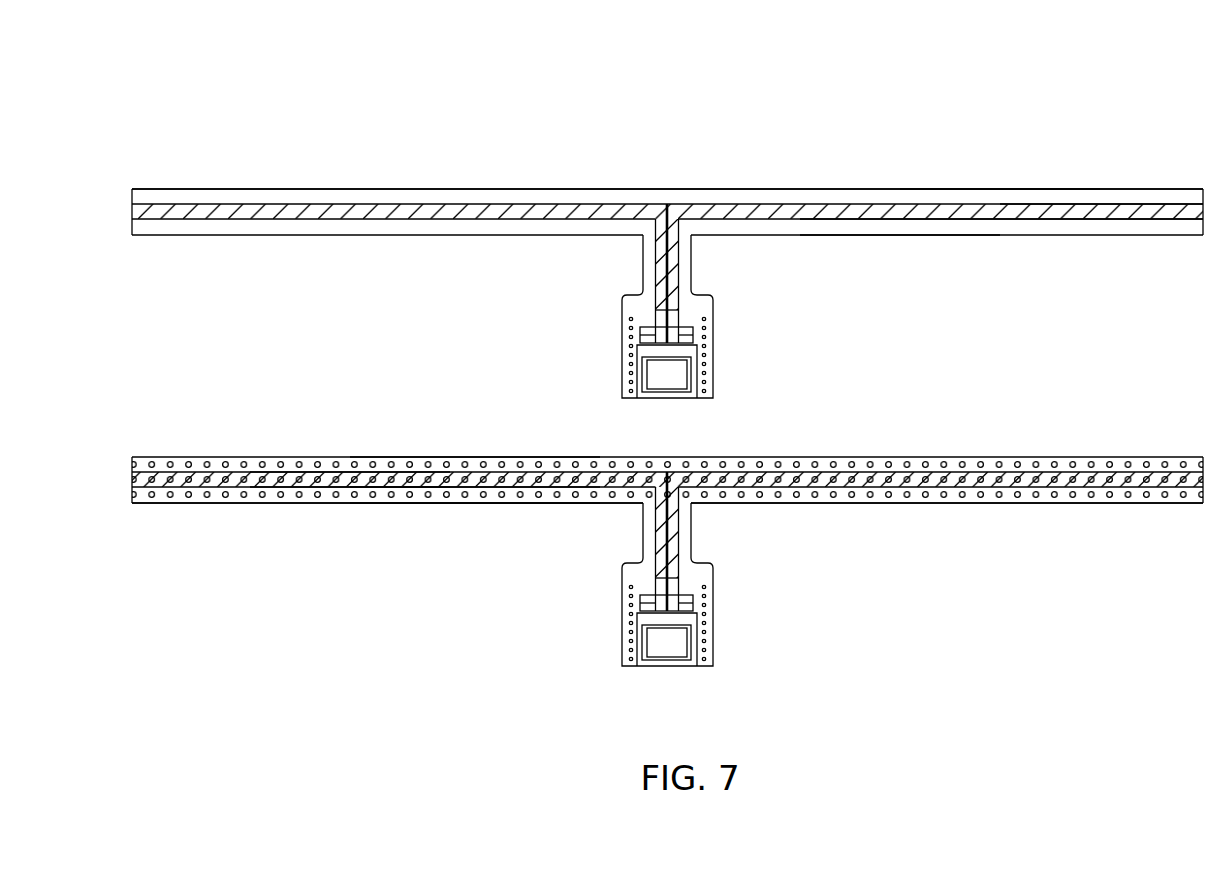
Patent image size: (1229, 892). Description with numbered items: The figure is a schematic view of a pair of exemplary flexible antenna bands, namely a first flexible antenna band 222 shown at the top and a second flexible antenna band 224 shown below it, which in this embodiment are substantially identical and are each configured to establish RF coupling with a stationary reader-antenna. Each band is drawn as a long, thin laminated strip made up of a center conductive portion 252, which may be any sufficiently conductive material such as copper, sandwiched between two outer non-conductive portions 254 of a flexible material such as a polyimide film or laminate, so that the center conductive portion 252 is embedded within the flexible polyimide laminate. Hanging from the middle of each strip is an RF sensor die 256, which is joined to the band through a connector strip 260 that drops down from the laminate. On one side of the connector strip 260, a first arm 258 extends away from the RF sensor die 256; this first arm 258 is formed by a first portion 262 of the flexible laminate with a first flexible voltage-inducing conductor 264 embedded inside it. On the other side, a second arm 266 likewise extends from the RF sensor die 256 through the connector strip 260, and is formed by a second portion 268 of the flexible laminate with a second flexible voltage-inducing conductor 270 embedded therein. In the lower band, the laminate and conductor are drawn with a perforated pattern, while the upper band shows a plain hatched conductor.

The first flexible antenna band 222 is at (385, 175).
The second flexible antenna band 224 is at (202, 519).
The center conductive portion 252 is at (398, 220).
The outer non-conductive portions 254 is at (653, 196).
The RF sensor die 256 is at (670, 372).
The first arm 258 is at (1015, 176).
The connector strip 260 is at (674, 264).
The first portion of the flexible laminate 262 is at (909, 253).
The first flexible voltage-inducing conductor 264 is at (1058, 210).
The second arm 266 is at (472, 443).
The second portion of the flexible laminate 268 is at (472, 519).
The second flexible voltage-inducing conductor 270 is at (346, 471).